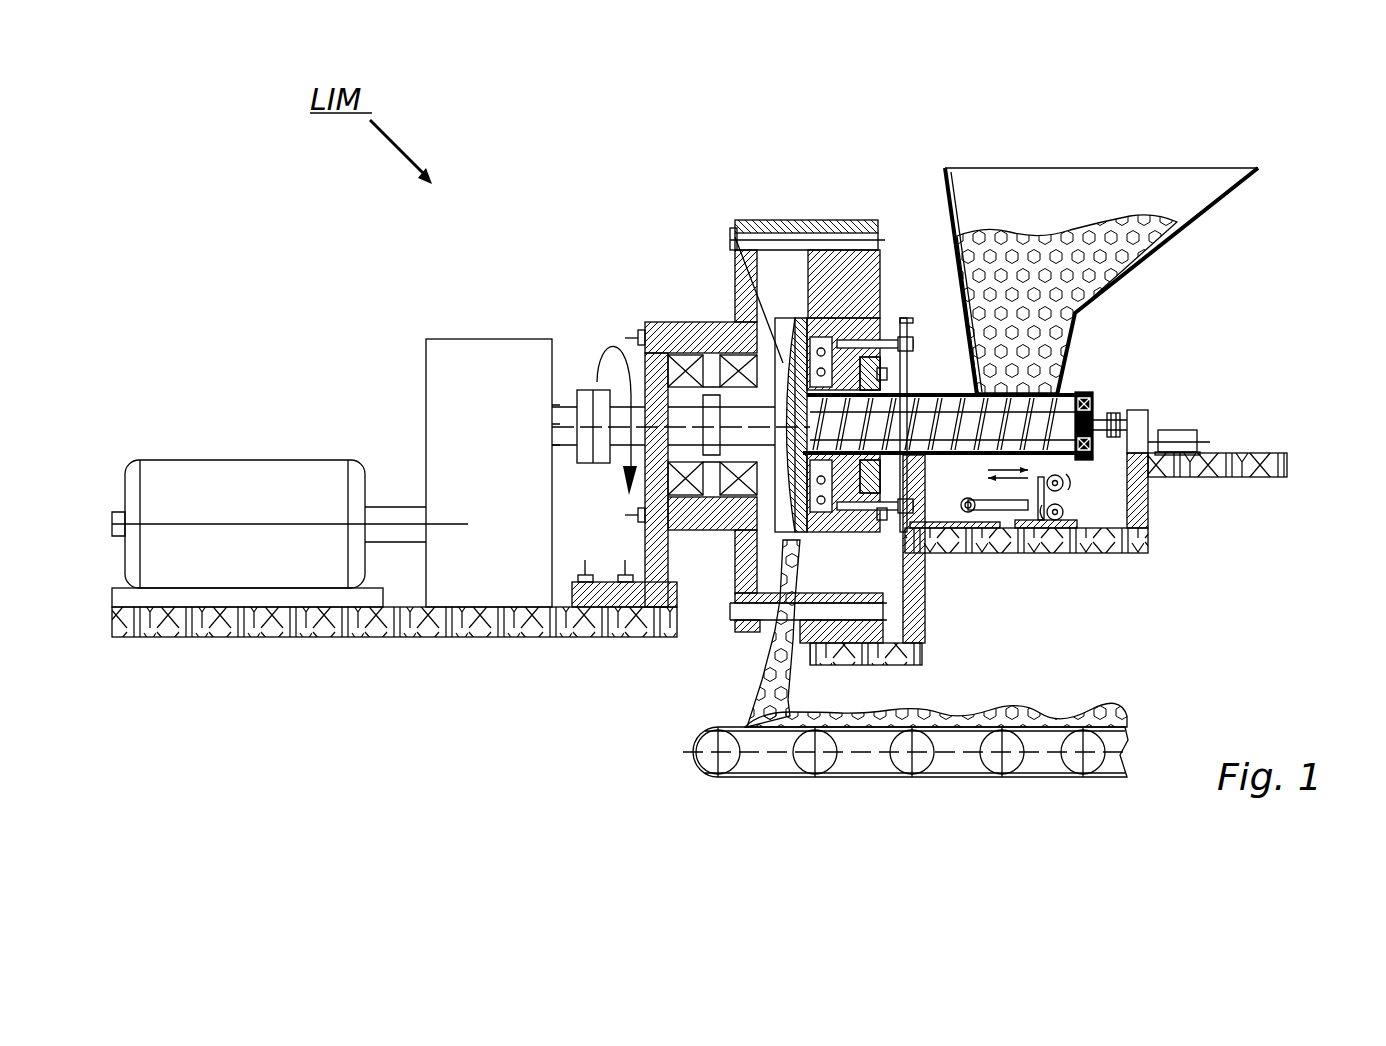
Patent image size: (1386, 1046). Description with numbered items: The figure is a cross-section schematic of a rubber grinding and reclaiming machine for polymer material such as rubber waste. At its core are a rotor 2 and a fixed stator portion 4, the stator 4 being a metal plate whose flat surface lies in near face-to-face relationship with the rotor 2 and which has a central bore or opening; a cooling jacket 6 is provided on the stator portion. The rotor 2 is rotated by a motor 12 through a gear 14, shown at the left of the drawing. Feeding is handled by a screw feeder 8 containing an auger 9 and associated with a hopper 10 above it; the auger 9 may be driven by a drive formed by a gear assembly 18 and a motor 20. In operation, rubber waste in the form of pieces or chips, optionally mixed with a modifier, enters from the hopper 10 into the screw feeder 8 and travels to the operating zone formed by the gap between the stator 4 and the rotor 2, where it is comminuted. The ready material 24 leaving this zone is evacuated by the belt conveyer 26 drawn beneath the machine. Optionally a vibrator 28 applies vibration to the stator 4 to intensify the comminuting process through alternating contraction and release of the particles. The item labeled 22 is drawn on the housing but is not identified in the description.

The rotor 2 is at (730, 227).
The fixed stator portion 4 is at (862, 325).
The cooling jacket 6 is at (783, 530).
The screw feeder 8 is at (947, 385).
The auger 9 is at (1055, 417).
The hopper 10 is at (1027, 298).
The motor 12 is at (260, 588).
The gear 14 is at (448, 474).
The gear assembly 18 is at (1067, 483).
The motor 20 is at (1150, 462).
The cover plate 22 is at (813, 228).
The ready material 24 is at (1042, 717).
The belt conveyer 26 is at (835, 752).
The vibrator 28 is at (1172, 448).